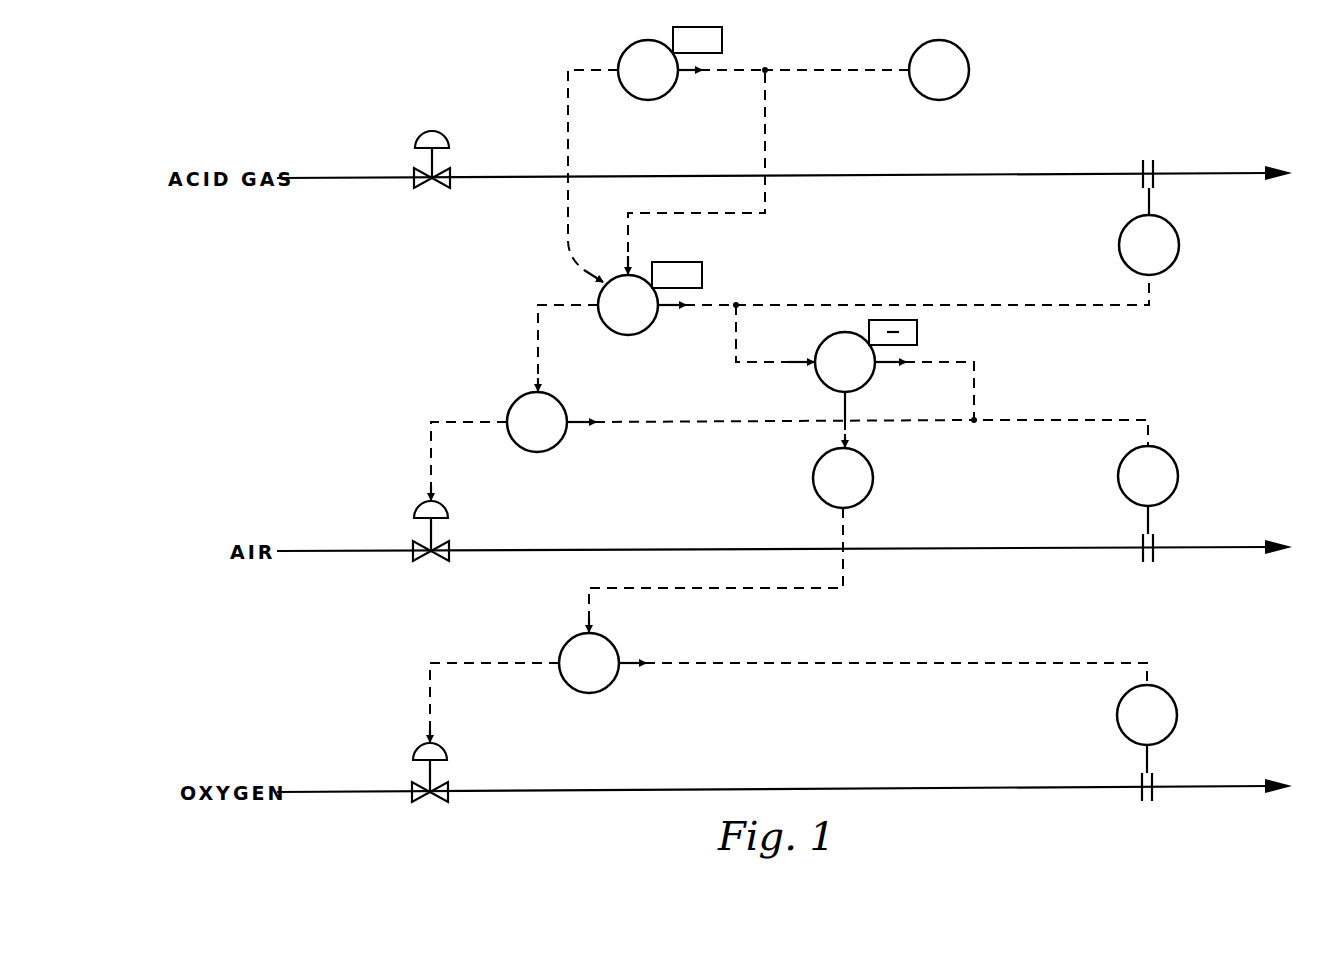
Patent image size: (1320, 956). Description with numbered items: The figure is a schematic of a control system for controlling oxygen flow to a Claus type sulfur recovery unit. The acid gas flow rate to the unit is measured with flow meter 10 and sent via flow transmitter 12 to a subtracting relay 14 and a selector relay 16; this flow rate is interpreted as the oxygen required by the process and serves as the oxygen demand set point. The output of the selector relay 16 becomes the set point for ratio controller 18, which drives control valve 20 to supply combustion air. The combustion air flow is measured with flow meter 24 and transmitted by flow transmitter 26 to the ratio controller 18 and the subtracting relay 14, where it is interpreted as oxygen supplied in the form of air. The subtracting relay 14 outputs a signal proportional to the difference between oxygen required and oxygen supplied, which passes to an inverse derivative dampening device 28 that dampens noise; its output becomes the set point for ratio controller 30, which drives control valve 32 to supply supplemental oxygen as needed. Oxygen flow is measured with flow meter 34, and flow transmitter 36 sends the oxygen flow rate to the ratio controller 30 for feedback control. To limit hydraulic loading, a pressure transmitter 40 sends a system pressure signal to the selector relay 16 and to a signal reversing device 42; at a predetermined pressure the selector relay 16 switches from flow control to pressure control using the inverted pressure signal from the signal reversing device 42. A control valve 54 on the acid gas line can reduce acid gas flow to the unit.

The flow meter 10 is at (1158, 168).
The flow transmitter 12 is at (1179, 243).
The subtracting relay 14 is at (820, 380).
The selector relay 16 is at (630, 335).
The ratio controller 18 is at (558, 446).
The control valve 20 is at (444, 510).
The flow meter 24 is at (1158, 542).
The flow transmitter 26 is at (1176, 462).
The inverse derivative dampening device 28 is at (873, 476).
The ratio controller 30 is at (609, 686).
The control valve 32 is at (444, 758).
The flow meter 34 is at (1157, 781).
The flow transmitter 36 is at (1172, 698).
The pressure transmitter 40 is at (962, 88).
The signal reversing device 42 is at (648, 100).
The control valve 54 is at (440, 140).